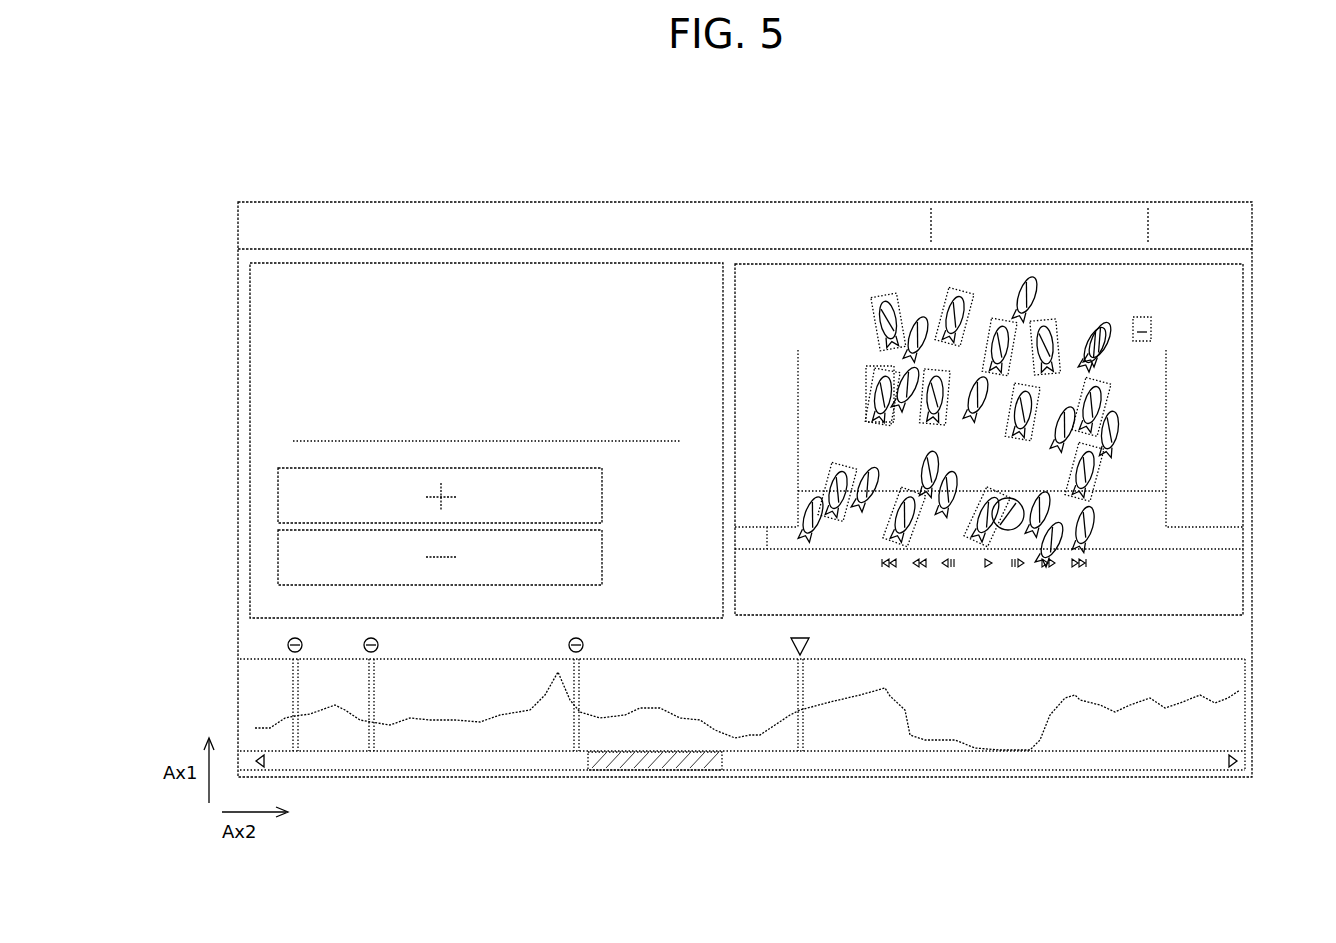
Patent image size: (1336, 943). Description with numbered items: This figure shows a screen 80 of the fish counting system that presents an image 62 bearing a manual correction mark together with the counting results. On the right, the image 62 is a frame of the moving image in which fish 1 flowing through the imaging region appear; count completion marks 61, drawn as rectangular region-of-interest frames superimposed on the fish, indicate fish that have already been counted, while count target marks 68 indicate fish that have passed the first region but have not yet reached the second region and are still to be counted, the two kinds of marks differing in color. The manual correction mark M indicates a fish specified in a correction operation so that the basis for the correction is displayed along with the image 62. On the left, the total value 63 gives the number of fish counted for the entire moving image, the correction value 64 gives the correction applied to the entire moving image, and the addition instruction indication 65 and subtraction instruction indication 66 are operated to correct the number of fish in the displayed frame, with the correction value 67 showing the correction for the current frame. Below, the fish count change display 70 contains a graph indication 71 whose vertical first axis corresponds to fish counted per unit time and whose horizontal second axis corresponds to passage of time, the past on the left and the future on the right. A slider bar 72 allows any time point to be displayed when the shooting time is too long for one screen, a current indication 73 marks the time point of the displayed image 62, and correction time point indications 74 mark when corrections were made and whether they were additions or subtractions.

The display screen 80 is at (555, 190).
The total value 63 is at (262, 291).
The correction value 64 is at (687, 365).
The addition instruction indication 65 is at (283, 481).
The subtraction instruction indication 66 is at (283, 545).
The correction value 67 is at (690, 510).
The image 62 is at (1222, 313).
The count completion marks 61 is at (880, 305).
The count target marks 68 is at (877, 385).
The fish 1 is at (1107, 323).
The fish count change display 70 is at (1240, 663).
The graph indication 71 is at (1060, 698).
The slider bar 72 is at (703, 772).
The current indication 73 is at (806, 660).
The correction time point indication 74 is at (300, 658).